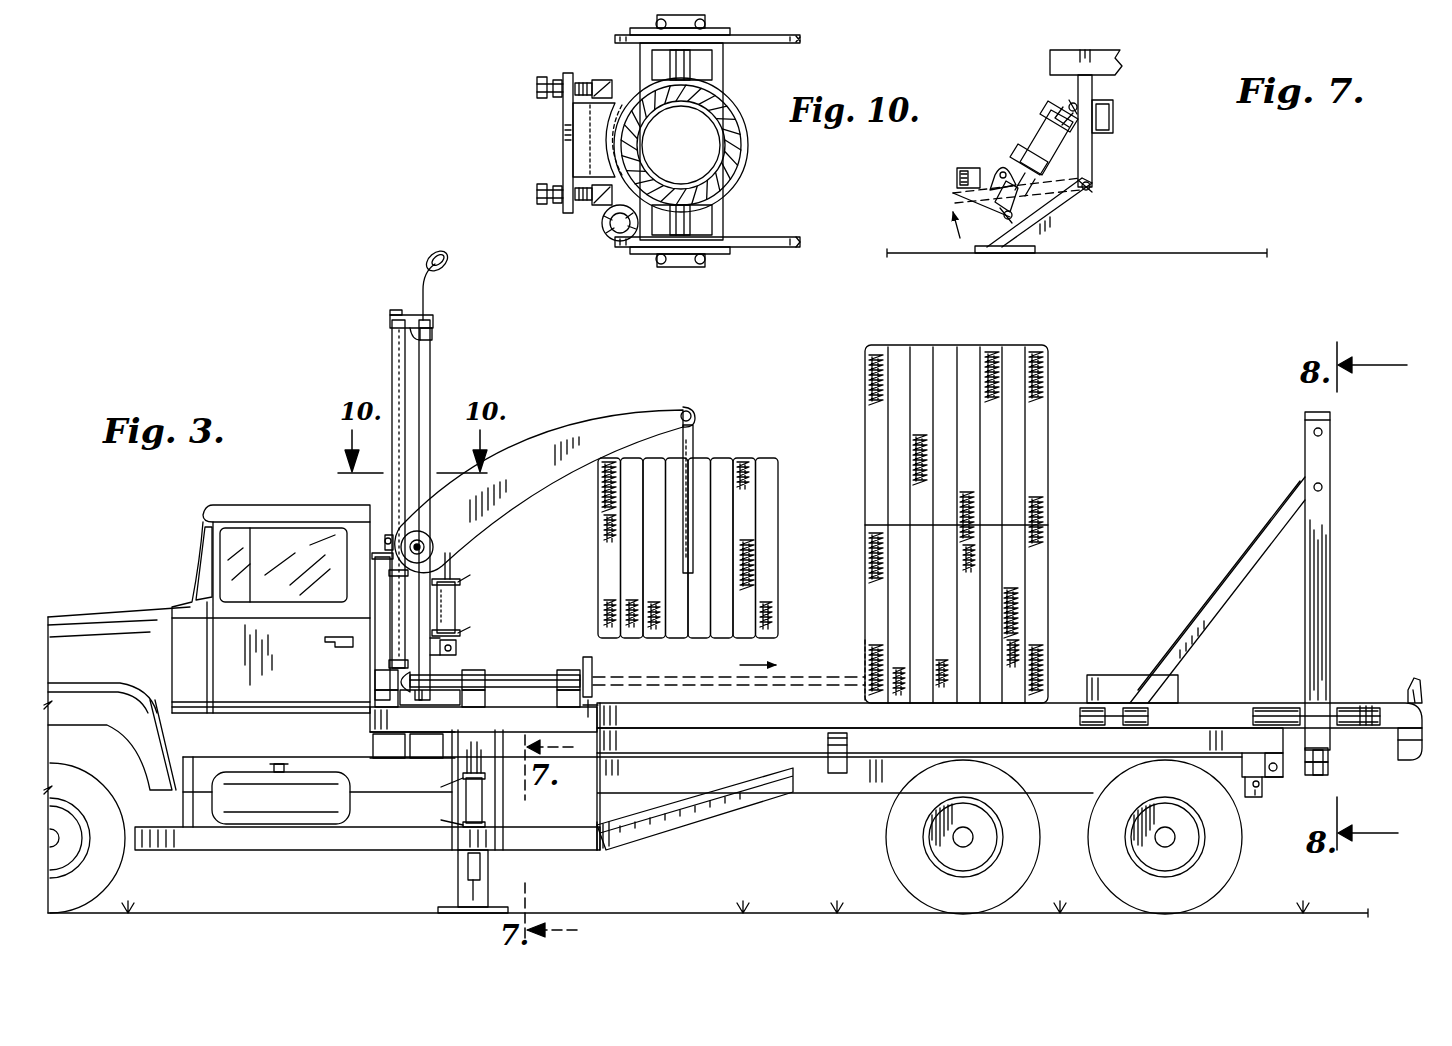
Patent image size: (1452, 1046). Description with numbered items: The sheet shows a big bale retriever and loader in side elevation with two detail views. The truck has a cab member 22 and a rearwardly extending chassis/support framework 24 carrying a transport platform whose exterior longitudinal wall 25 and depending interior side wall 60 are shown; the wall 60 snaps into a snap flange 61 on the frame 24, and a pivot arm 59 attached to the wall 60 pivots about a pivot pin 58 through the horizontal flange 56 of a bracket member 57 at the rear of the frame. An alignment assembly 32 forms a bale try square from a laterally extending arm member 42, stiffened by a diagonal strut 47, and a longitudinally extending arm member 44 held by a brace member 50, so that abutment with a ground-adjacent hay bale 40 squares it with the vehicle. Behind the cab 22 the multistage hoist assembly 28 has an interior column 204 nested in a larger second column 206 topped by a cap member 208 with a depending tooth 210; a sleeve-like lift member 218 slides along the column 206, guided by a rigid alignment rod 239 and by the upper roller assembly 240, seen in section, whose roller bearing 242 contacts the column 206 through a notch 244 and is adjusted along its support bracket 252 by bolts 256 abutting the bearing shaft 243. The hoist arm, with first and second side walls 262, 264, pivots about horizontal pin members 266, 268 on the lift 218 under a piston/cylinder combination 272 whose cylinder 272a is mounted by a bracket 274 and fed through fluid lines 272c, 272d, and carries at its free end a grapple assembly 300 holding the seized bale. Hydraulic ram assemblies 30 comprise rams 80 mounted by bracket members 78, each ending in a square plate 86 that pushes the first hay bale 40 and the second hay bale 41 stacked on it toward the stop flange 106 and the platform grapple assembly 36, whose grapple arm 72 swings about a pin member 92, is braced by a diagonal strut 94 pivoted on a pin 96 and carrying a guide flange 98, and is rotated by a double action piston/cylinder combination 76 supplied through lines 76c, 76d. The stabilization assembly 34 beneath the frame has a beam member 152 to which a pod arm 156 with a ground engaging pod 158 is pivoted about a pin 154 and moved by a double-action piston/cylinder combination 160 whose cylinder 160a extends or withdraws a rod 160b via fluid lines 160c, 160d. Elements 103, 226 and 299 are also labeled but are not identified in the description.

In FIG. 3, the cab member 22 is at (212, 513).
In FIG. 7, the vehicle chassis/support framework 24 is at (1110, 75).
In FIG. 3, the vehicle chassis/support framework 24 is at (813, 782).
In FIG. 3, the exterior longitudinal wall 25 is at (896, 717).
In FIG. 3, the multistage hoist assembly 28 is at (388, 473).
In FIG. 3, the hydraulic ram assemblies 30 is at (520, 672).
In FIG. 3, the alignment assembly 32 is at (318, 858).
In FIG. 7, the stabilization assembly 34 is at (976, 158).
In FIG. 3, the stabilization assembly 34 is at (414, 799).
In FIG. 3, the platform grapple assembly 36 is at (1252, 617).
In FIG. 3, the hay bale 40 is at (938, 524).
In FIG. 3, the second hay bale 41 is at (868, 400).
In FIG. 3, the laterally extending arm member 42 is at (597, 843).
In FIG. 7, the longitudinally extending arm member 44 is at (957, 178).
In FIG. 3, the longitudinally extending arm member 44 is at (352, 850).
In FIG. 3, the diagonal strut 47 is at (678, 815).
In FIG. 3, the brace member 50 is at (185, 802).
In FIG. 3, the horizontal flange member 56 is at (1250, 797).
In FIG. 3, the bracket member 57 is at (1287, 796).
In FIG. 3, the pivot pin 58 is at (1278, 772).
In FIG. 3, the pivot arm 59 is at (1265, 745).
In FIG. 3, the depending interior side wall 60 is at (940, 740).
In FIG. 3, the snap flange 61 is at (828, 745).
In FIG. 3, the grapple arm 72 is at (1330, 578).
In FIG. 3, the double action piston/cylinder combination 76 is at (1346, 779).
In FIG. 3, the fluid line 76c is at (1335, 756).
In FIG. 3, the fluid line 76d is at (1344, 767).
In FIG. 3, the bracket member 78 is at (392, 707).
In FIG. 3, the hydraulic ram 80 is at (712, 674).
In FIG. 3, the square plate 86 is at (862, 665).
In FIG. 3, the pin member 92 is at (1253, 717).
In FIG. 3, the diagonal strut 94 is at (1230, 577).
In FIG. 3, the pin 96 is at (1148, 717).
In FIG. 3, the guide flange 98 is at (1178, 684).
In FIG. 3, the rear bumper 103 is at (1408, 765).
In FIG. 3, the stop flange 106 is at (1406, 680).
In FIG. 7, the beam member 152 is at (1092, 152).
In FIG. 7, the pin 154 is at (1091, 184).
In FIG. 7, the pod arm 156 is at (1062, 204).
In FIG. 7, the ground engaging pod 158 is at (1038, 247).
In FIG. 3, the ground engaging pod 158 is at (445, 910).
In FIG. 7, the double-action piston/cylinder combination 160 is at (1026, 134).
In FIG. 7, the cylinder 160a is at (1052, 118).
In FIG. 7, the rod 160b is at (1018, 172).
In FIG. 3, the fluid line 160c is at (440, 785).
In FIG. 3, the fluid line 160d is at (440, 820).
In FIG. 10, the interior column 204 is at (642, 130).
In FIG. 10, the second column 206 is at (739, 170).
In FIG. 3, the second column 206 is at (420, 388).
In FIG. 3, the cap member 208 is at (427, 322).
In FIG. 3, the lug or tooth 210 is at (432, 346).
In FIG. 10, the sleeve-like lift member 218 is at (730, 108).
In FIG. 3, the mast hydraulic cylinder 226 is at (374, 622).
In FIG. 10, the rigid alignment rod 239 is at (604, 233).
In FIG. 10, the upper roller assembly 240 is at (506, 152).
In FIG. 10, the roller bearing 242 is at (600, 119).
In FIG. 10, the bearing shaft 243 is at (592, 78).
In FIG. 10, the notch 244 is at (615, 106).
In FIG. 10, the support bracket 252 is at (583, 177).
In FIG. 10, the bolts 256 is at (537, 88).
In FIG. 10, the first side wall 262 is at (758, 38).
In FIG. 10, the second side wall 264 is at (798, 250).
In FIG. 3, the second side wall 264 is at (630, 425).
In FIG. 10, the horizontal pin member 266 is at (690, 70).
In FIG. 10, the horizontal pin member 268 is at (690, 218).
In FIG. 3, the horizontal pin member 268 is at (420, 541).
In FIG. 3, the piston/cylinder combination 272 is at (495, 585).
In FIG. 3, the cylinder 272a is at (448, 562).
In FIG. 3, the fluid line 272c is at (461, 581).
In FIG. 3, the fluid line 272d is at (461, 632).
In FIG. 3, the bracket 274 is at (462, 649).
In FIG. 3, the mast post 299 is at (392, 383).
In FIG. 3, the grapple assembly 300 is at (710, 429).